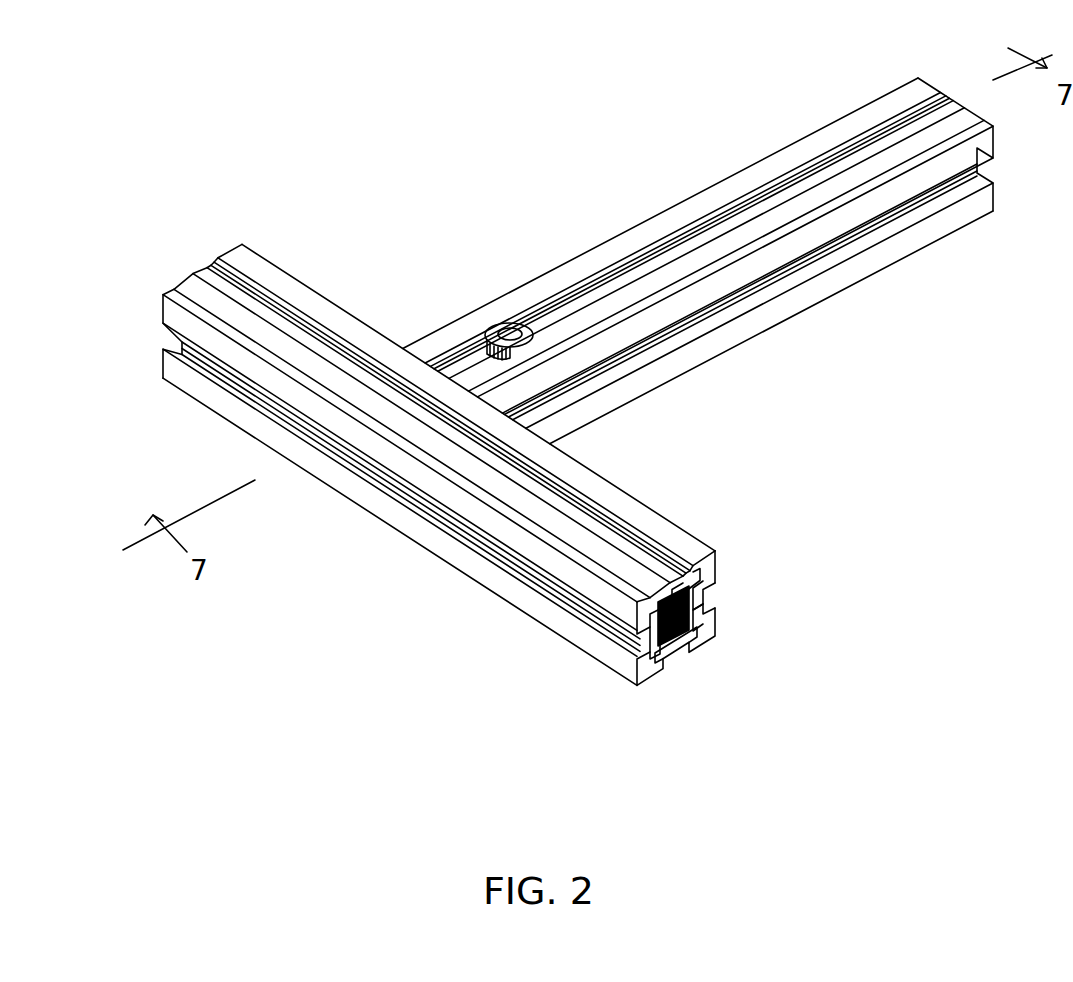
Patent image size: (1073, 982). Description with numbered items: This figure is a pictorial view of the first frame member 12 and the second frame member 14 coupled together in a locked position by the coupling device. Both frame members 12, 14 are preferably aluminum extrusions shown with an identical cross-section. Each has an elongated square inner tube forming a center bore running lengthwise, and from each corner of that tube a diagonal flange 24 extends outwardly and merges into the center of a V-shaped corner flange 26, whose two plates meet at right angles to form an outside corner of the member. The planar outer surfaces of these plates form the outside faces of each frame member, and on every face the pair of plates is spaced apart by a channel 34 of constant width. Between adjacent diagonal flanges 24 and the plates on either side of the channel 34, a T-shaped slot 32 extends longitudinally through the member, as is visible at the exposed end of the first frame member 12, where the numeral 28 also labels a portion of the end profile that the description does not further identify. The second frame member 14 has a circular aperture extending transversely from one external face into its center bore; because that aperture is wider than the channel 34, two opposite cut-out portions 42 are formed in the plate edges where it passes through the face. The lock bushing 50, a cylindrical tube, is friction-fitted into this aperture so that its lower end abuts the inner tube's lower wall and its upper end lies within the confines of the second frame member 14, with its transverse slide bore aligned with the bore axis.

The first frame member 12 is at (222, 432).
The second frame member 14 is at (947, 243).
The diagonal flange 24 is at (702, 562).
The V-shaped corner flange 26 is at (717, 568).
The side wall 28 is at (708, 583).
The T-shaped slot 32 is at (697, 622).
The channel 34 is at (710, 592).
The cut-out portion 42 is at (537, 340).
The lock bushing 50 is at (497, 318).